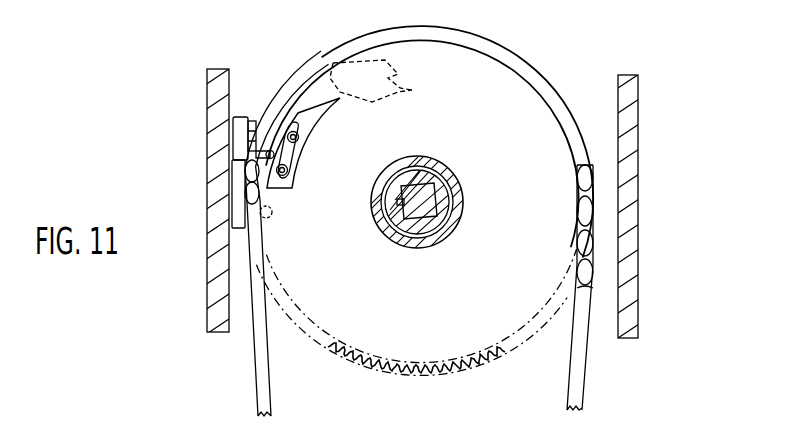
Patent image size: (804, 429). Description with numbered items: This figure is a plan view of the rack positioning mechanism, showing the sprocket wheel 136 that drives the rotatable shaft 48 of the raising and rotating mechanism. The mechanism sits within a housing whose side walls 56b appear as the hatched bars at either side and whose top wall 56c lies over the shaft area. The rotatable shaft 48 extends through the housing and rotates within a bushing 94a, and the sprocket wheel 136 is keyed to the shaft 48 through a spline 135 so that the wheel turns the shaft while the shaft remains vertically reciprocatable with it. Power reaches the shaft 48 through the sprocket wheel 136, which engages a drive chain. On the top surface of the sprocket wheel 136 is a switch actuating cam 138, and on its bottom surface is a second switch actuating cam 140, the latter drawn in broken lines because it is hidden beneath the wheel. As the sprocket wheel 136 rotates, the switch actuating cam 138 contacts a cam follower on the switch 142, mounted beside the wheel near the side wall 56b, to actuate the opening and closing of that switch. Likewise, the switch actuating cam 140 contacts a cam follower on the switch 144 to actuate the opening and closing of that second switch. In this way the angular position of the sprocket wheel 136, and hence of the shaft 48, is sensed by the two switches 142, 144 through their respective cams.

The side walls 56b is at (214, 104).
The switch 142 is at (244, 118).
The switch actuating cam 140 is at (401, 87).
The switch actuating cam 138 is at (326, 128).
The sprocket wheel 136 is at (527, 108).
The bushing 94a is at (422, 143).
The spline 135 is at (397, 202).
The top wall 56c is at (466, 206).
The rotatable shaft 48 is at (412, 222).
The switch 144 is at (250, 244).